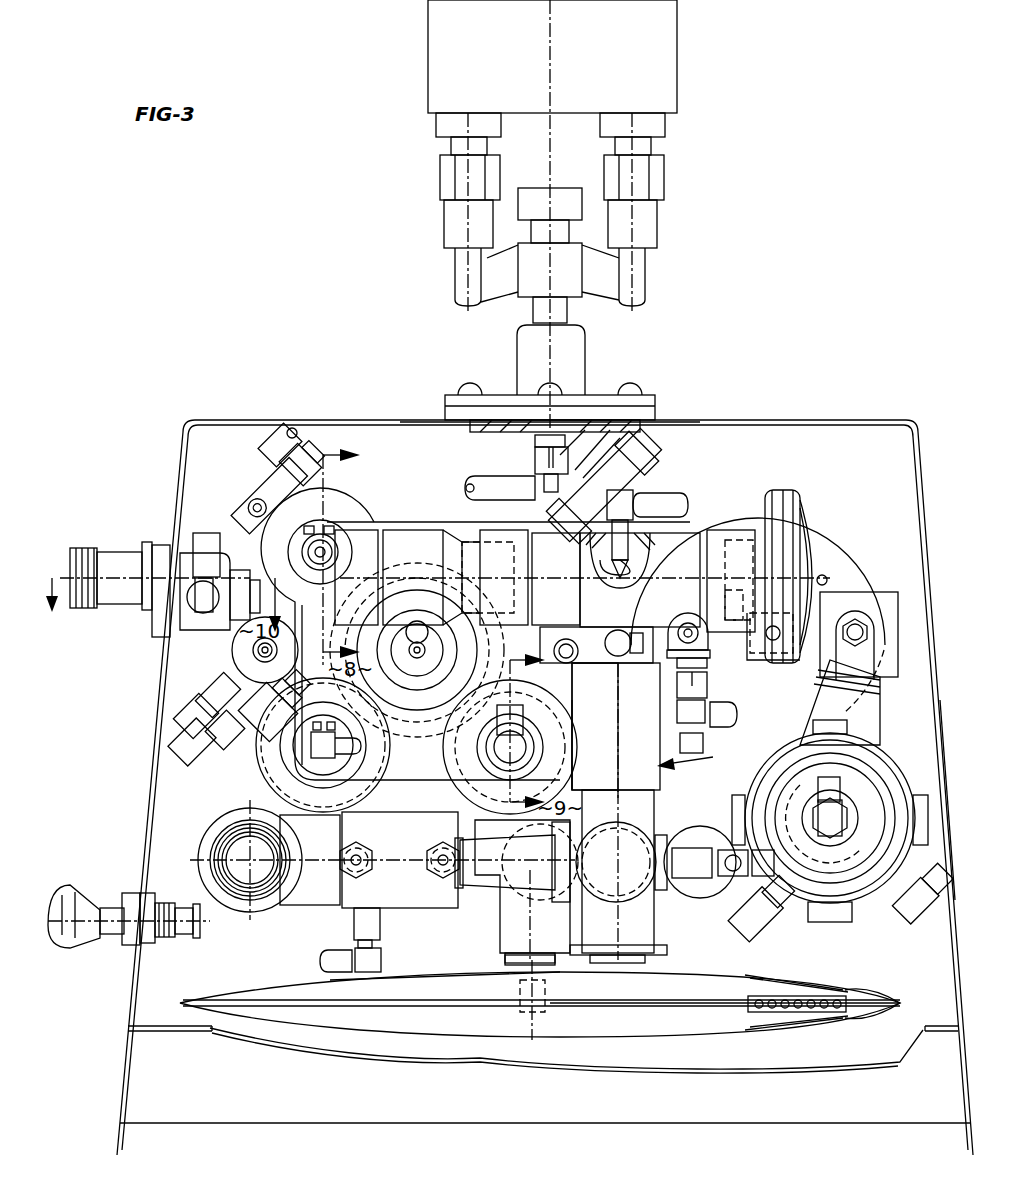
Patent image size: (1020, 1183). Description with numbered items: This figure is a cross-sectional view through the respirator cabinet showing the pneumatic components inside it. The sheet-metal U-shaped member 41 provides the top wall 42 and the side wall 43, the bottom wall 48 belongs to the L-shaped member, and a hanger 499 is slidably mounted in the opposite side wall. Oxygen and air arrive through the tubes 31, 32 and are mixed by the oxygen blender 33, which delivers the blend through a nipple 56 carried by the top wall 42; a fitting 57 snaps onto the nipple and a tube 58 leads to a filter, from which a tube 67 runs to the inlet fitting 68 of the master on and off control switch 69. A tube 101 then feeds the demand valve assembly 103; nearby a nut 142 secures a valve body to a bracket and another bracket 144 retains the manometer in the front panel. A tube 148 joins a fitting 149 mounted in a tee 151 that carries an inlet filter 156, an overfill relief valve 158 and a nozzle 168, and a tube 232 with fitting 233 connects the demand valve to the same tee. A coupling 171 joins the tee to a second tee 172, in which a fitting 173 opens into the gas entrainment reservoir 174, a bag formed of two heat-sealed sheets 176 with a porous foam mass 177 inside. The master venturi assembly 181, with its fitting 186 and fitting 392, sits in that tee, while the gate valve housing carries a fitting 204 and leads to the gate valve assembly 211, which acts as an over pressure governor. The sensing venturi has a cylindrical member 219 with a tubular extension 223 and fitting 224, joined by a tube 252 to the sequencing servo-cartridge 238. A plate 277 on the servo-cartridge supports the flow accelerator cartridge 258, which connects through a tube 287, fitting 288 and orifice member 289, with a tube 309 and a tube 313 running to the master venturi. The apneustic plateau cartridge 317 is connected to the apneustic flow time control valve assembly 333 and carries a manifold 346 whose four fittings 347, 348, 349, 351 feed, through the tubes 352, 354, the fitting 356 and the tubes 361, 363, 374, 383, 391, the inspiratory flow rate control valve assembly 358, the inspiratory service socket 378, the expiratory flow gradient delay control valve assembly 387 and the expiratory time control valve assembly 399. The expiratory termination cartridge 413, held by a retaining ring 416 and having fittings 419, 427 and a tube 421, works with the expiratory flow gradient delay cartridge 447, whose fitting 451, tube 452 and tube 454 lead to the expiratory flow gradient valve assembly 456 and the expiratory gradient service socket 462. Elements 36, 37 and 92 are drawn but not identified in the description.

The tube 31 is at (640, 272).
The tube 32 is at (454, 270).
The oxygen blender 33 is at (688, 38).
The stem 36 is at (518, 342).
The cross link 37 is at (616, 300).
The U-shaped member 41 is at (864, 410).
The top wall 42 is at (775, 420).
The side wall 43 is at (945, 700).
The bottom wall 48 is at (175, 1032).
The nipple 56 is at (535, 441).
The fitting 57 is at (535, 460).
The tube 58 is at (470, 484).
The tube 67 is at (196, 538).
The inlet fitting 68 is at (203, 610).
The master on and off control switch 69 is at (132, 540).
The knob 92 is at (110, 548).
The tube 101 is at (818, 700).
The demand valve assembly 103 is at (888, 762).
The nut 142 is at (845, 620).
The bracket 144 is at (880, 592).
The tube 148 is at (680, 500).
The fitting 149 is at (640, 498).
The tee 151 is at (690, 535).
The inlet filter 156 is at (780, 500).
The overfill relief valve 158 is at (400, 530).
The nozzle 168 is at (612, 578).
The coupling 171 is at (705, 756).
The tee 172 is at (655, 798).
The fitting 173 is at (662, 950).
The gas entrainment reservoir 174 is at (395, 1040).
The sheets 176 is at (770, 978).
The sheet-like mass 177 is at (800, 1014).
The master venturi assembly 181 is at (464, 955).
The fitting 186 is at (656, 890).
The fitting 204 is at (354, 930).
The gate valve assembly 211 is at (222, 808).
The cylindrical member 219 is at (500, 830).
The tubular extension 223 is at (548, 992).
The fitting 224 is at (520, 965).
The tube 232 is at (617, 731).
The fitting 233 is at (626, 632).
The sequencing servo-cartridge 238 is at (432, 640).
The tube 252 is at (540, 1038).
The flow accelerator cartridge 258 is at (260, 538).
The plate 277 is at (425, 810).
The tube 287 is at (737, 714).
The fitting 288 is at (677, 712).
The member 289 is at (705, 658).
The tube 309 is at (730, 880).
The tube 313 is at (680, 745).
The apneustic plateau cartridge 317 is at (468, 518).
The apneustic flow time control valve assembly 333 is at (808, 930).
The manifold 346 is at (600, 450).
The fitting 347 is at (570, 470).
The fitting 348 is at (595, 470).
The fitting 349 is at (660, 480).
The fitting 351 is at (650, 460).
The tube 352 is at (597, 553).
The tube 354 is at (195, 732).
The fitting 356 is at (190, 712).
The inspiratory flow rate control valve assembly 358 is at (238, 668).
The tube 361 is at (265, 652).
The tube 363 is at (283, 432).
The tube 374 is at (250, 482).
The inspiratory service socket 378 is at (348, 885).
The tube 383 is at (780, 925).
The expiratory flow gradient delay control valve assembly 387 is at (710, 830).
The tube 391 is at (320, 960).
The fitting 392 is at (381, 962).
The expiratory time control valve assembly 399 is at (570, 665).
The expiratory termination cartridge 413 is at (566, 768).
The retaining ring 416 is at (440, 768).
The fitting 419 is at (488, 744).
The tube 421 is at (470, 722).
The fitting 427 is at (566, 742).
The expiratory flow gradient delay cartridge 447 is at (285, 742).
The fitting 451 is at (288, 770).
The tube 452 is at (340, 740).
The tube 454 is at (228, 740).
The expiratory flow gradient valve assembly 456 is at (520, 880).
The expiratory gradient service socket 462 is at (436, 885).
The hanger 499 is at (92, 888).